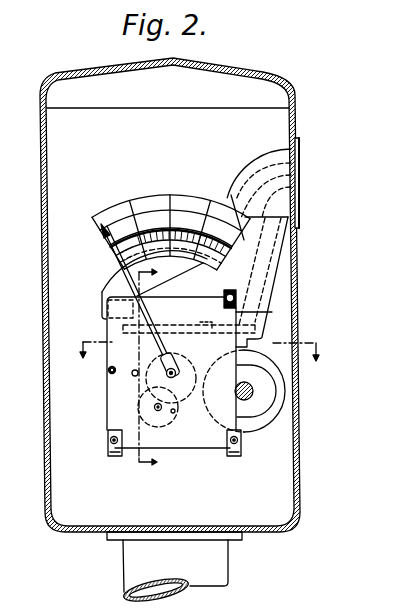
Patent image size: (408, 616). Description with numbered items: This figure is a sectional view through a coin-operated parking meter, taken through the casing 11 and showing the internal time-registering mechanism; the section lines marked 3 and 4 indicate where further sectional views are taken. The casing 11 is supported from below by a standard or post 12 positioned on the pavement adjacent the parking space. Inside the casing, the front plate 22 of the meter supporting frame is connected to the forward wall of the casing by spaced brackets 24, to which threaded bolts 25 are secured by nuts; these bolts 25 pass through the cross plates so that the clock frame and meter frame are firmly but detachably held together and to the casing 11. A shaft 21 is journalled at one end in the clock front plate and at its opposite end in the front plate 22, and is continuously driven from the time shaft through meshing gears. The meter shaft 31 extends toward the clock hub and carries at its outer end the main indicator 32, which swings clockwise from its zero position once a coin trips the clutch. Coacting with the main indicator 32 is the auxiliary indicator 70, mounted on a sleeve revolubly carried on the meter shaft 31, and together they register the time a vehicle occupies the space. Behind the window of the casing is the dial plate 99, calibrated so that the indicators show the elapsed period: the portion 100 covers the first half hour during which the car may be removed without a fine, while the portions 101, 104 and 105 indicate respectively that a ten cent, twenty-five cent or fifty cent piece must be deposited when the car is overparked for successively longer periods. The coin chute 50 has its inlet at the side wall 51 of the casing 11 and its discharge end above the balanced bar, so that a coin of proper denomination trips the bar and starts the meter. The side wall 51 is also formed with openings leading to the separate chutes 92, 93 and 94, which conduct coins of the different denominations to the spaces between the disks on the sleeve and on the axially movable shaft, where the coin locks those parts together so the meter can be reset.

The casing 11 is at (273, 70).
The standard or post 12 is at (222, 564).
The shaft 21 is at (132, 374).
The front plate 22 is at (189, 448).
The brackets 24 is at (237, 298).
The threaded bolts 25 is at (111, 440).
The meter shaft 31 is at (176, 398).
The main indicator 32 is at (102, 239).
The coin chute 50 is at (102, 293).
The side wall 51 is at (297, 276).
The auxiliary indicator 70 is at (117, 263).
The chute 92 is at (290, 334).
The chute 93 is at (290, 325).
The chute 94 is at (272, 312).
The dial plate 99 is at (170, 214).
The portion 100 is at (118, 192).
The portion 101 is at (153, 196).
The portion 104 is at (193, 198).
The portion 105 is at (290, 207).
The section line 3- 3 is at (152, 368).
The section line 4- 4 is at (199, 359).